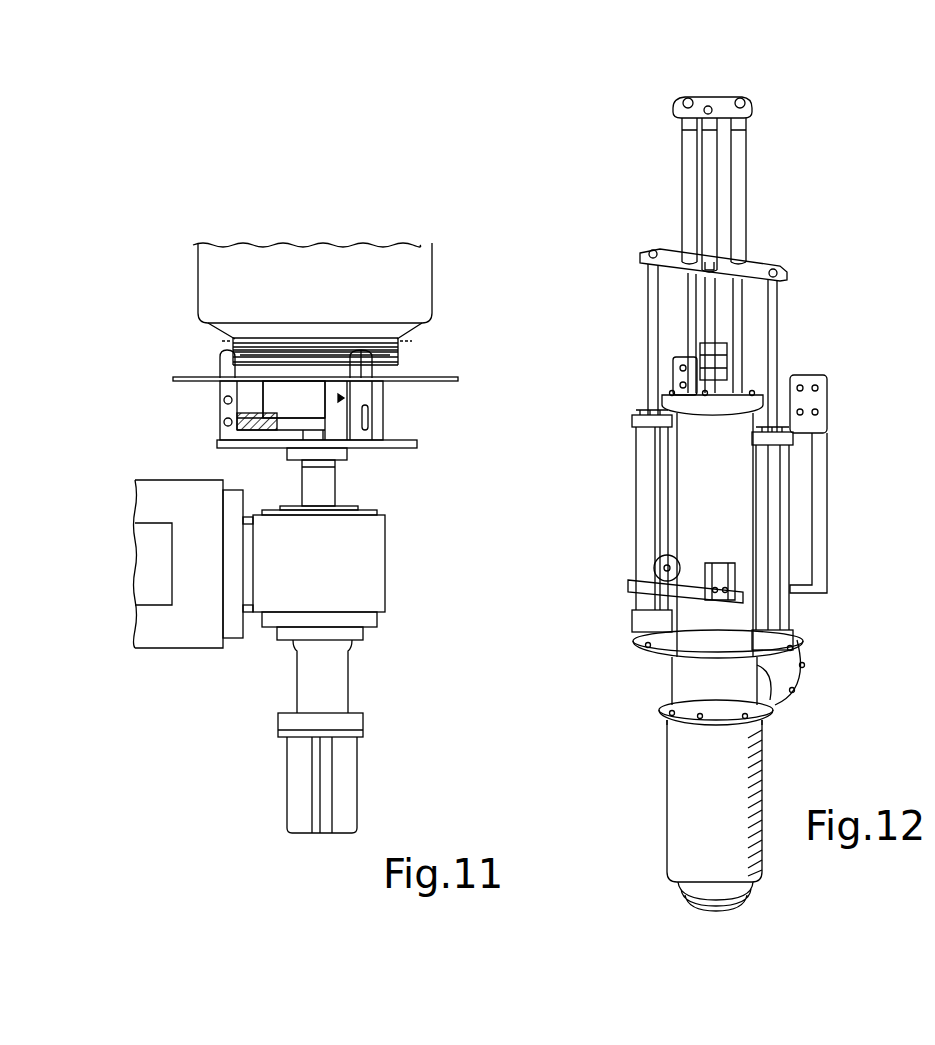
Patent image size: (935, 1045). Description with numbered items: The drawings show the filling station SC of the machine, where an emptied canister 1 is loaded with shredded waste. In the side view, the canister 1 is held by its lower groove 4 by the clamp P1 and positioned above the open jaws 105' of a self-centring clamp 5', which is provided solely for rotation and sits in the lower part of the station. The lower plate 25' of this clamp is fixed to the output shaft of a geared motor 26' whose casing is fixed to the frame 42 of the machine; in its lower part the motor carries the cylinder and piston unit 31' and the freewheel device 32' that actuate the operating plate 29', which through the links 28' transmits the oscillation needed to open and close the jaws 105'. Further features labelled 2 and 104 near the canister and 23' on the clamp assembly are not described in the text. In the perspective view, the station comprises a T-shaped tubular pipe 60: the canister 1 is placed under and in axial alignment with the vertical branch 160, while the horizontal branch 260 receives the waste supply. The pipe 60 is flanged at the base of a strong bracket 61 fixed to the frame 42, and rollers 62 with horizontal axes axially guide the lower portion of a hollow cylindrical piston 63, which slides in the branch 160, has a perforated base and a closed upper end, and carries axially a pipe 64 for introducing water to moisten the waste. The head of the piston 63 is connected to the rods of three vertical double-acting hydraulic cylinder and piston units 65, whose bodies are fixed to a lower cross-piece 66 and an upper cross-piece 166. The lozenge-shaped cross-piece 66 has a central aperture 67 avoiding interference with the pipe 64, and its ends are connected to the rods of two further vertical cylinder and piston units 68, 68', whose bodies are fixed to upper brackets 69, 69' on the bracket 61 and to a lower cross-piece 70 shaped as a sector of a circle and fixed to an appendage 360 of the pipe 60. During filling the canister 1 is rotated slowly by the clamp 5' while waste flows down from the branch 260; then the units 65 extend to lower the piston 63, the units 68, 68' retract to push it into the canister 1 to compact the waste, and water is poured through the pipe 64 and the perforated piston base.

In FIG. 11, the filling station SC is at (308, 222).
In FIG. 11, the canister 1 is at (436, 256).
In FIG. 12, the canister 1 is at (766, 778).
In FIG. 11, the container neck / bottom rim 2 is at (410, 358).
In FIG. 12, the container neck / bottom rim 2 is at (760, 892).
In FIG. 11, the lower groove 4 is at (250, 338).
In FIG. 11, the neck ring 104 is at (283, 358).
In FIG. 11, the jaws 105' is at (234, 325).
In FIG. 11, the clamp P1 is at (414, 343).
In FIG. 11, the self-centring clamp 5' is at (256, 410).
In FIG. 11, the support plate 23' is at (351, 402).
In FIG. 11, the lower plate 25' is at (362, 456).
In FIG. 11, the geared motor 26' is at (373, 544).
In FIG. 11, the links 28' is at (212, 438).
In FIG. 11, the operating plate 29' is at (290, 443).
In FIG. 11, the cylinder and piston unit 31' is at (371, 785).
In FIG. 11, the freewheel device 32' is at (363, 682).
In FIG. 11, the frame 42 is at (168, 653).
In FIG. 12, the upper cross-piece 166 is at (722, 99).
In FIG. 12, the vertical double-acting hydraulic cylinder and piston units 65 is at (750, 157).
In FIG. 12, the central aperture 67 is at (726, 258).
In FIG. 12, the lower cross-piece 66 is at (762, 266).
In FIG. 12, the pipe 64 is at (730, 352).
In FIG. 12, the upper bracket 69 is at (640, 369).
In FIG. 12, the upper bracket 69' is at (851, 404).
In FIG. 12, the vertical double-acting hydraulic cylinder and piston unit 68 is at (610, 521).
In FIG. 12, the vertical double-acting hydraulic cylinder and piston unit 68' is at (831, 538).
In FIG. 12, the bracket 61 is at (830, 548).
In FIG. 12, the hollow cylindrical piston 63 is at (712, 524).
In FIG. 12, the rollers 62 is at (718, 560).
In FIG. 12, the lower cross-piece 70 is at (645, 640).
In FIG. 12, the T-shaped tubular pipe 60 is at (668, 680).
In FIG. 12, the horizontal branch 260 is at (775, 676).
In FIG. 12, the appendage 360 is at (665, 656).
In FIG. 12, the vertical branch 160 is at (668, 716).